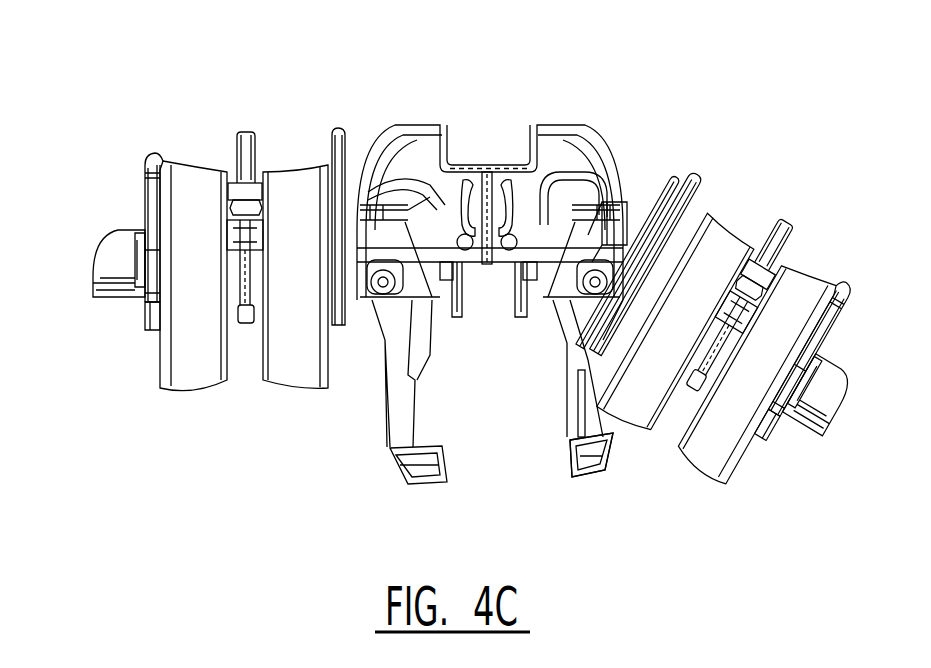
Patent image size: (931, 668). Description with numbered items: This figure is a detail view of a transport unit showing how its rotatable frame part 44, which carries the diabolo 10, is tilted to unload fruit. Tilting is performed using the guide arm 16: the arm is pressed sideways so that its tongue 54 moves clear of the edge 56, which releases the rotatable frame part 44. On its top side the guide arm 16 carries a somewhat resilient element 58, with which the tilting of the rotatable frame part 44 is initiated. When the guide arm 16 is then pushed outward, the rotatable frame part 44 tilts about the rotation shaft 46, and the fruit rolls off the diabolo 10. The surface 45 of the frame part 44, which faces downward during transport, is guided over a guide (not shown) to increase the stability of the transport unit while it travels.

The diabolo 10 is at (718, 247).
The guide arm 16 is at (570, 465).
The rotatable frame part 44 is at (837, 400).
The surface 45 is at (808, 439).
The rotation shaft 46 is at (627, 233).
The tongue 54 is at (465, 187).
The edge 56 is at (470, 190).
The resilient element 58 is at (390, 190).